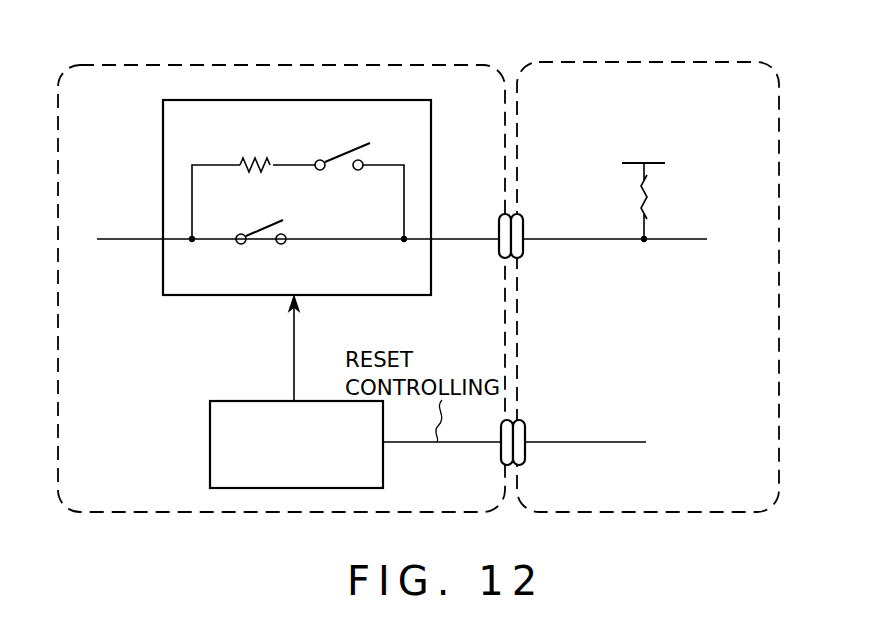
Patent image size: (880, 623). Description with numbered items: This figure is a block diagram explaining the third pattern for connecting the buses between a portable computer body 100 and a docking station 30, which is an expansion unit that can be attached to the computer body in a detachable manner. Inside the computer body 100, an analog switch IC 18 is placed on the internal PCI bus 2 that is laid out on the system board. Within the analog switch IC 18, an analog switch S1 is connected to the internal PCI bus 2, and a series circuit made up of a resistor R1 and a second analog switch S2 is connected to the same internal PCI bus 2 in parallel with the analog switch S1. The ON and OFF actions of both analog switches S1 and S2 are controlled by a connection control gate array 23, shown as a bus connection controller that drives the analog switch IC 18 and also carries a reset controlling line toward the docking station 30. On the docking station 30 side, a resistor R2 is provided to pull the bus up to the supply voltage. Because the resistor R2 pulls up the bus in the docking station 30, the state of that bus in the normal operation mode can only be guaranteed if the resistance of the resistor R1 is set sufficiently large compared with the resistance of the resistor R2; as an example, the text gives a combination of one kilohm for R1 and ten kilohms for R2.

The computer body 100 is at (440, 65).
The docking station 30 is at (690, 63).
The internal PCI bus 2 is at (113, 239).
The analog switch IC 18 is at (331, 197).
The connection control gate array 23 is at (242, 401).
The resistor R1 is at (254, 151).
The resistor R2 is at (655, 190).
The analog switch S1 is at (261, 223).
The analog switch S2 is at (342, 150).